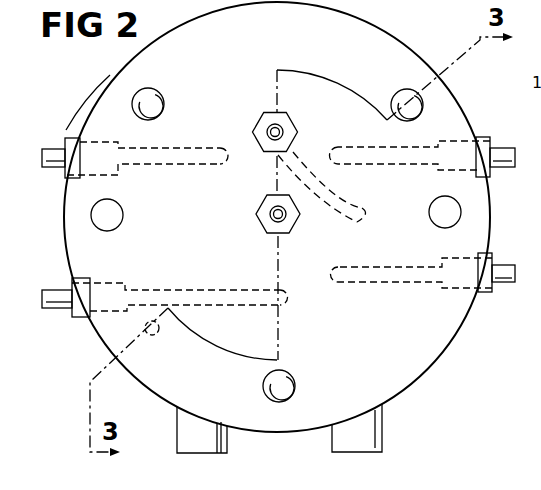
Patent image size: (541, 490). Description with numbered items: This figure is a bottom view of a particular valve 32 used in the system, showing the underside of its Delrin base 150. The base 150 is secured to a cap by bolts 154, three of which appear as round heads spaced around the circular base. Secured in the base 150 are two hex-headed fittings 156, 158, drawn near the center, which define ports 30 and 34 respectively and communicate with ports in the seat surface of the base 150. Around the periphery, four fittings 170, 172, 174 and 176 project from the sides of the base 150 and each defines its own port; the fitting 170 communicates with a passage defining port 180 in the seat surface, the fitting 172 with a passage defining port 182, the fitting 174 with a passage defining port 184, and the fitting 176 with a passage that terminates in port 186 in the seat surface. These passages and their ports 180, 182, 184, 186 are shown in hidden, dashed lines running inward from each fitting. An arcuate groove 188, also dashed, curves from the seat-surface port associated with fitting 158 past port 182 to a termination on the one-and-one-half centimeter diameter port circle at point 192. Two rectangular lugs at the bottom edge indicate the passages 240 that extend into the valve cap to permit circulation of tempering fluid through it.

The valve 32 is at (104, 71).
The port 34 is at (268, 116).
The port 30 is at (264, 217).
The Delrin base 150 is at (428, 380).
The bolts 154 is at (148, 106).
The fitting 156 is at (265, 213).
The fitting 158 is at (266, 126).
The fitting 170 is at (48, 152).
The fitting 172 is at (506, 148).
The fitting 174 is at (48, 304).
The fitting 176 is at (508, 262).
The port 180 is at (214, 170).
The port 182 is at (343, 166).
The port 184 is at (288, 303).
The port 186 is at (346, 290).
The arcuate groove 188 is at (307, 164).
The termination point 192 is at (358, 222).
The passages 240 is at (185, 428).